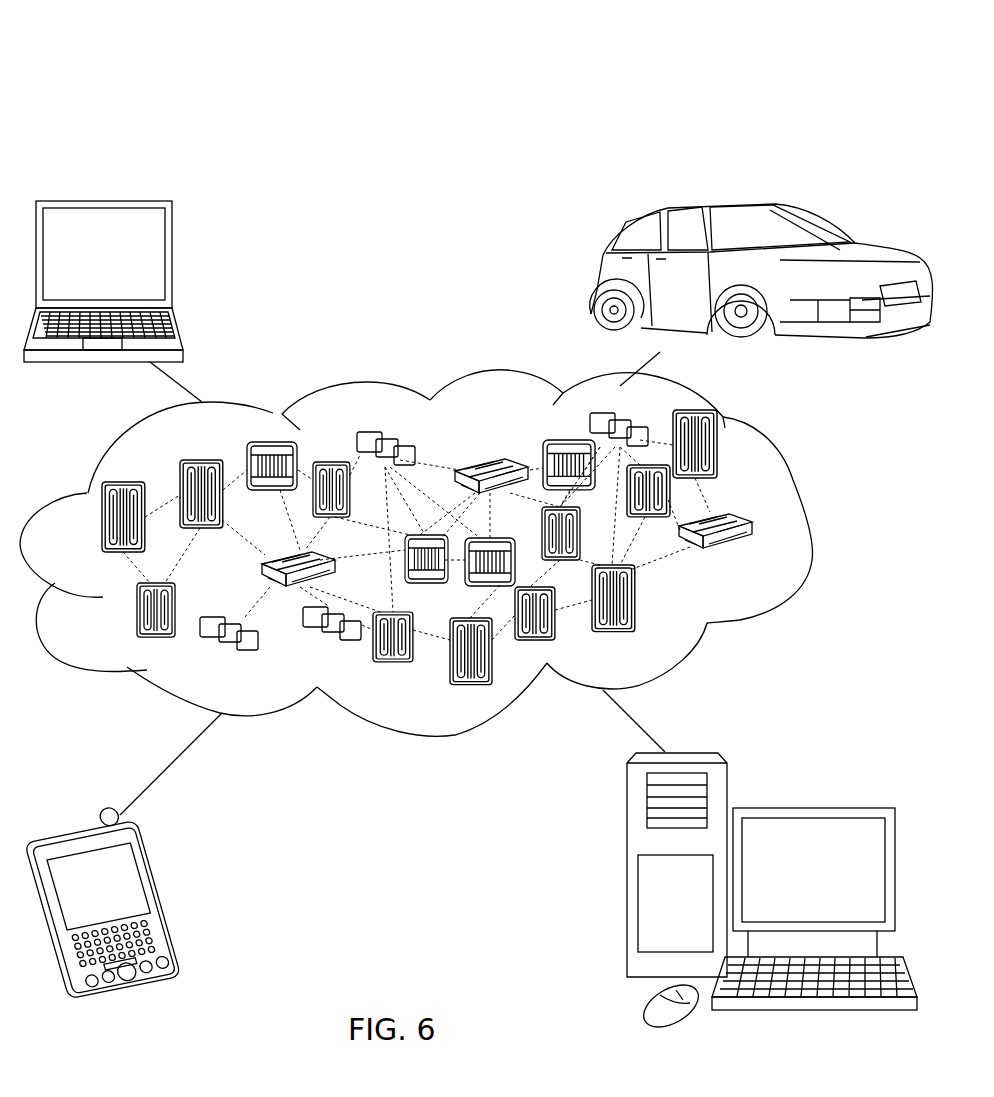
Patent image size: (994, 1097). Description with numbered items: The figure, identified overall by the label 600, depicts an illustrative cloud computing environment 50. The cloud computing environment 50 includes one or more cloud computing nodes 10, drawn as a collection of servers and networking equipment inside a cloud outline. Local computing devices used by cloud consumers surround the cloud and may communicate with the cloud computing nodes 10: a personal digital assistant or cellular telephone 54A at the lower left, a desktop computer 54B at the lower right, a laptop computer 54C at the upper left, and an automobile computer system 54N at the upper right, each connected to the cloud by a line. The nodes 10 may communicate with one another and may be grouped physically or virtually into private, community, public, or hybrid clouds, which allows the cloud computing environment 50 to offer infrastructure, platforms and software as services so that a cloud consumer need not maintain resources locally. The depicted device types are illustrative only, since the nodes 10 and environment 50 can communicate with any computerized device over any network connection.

The cloud computing environment overview 600 is at (82, 64).
The cloud computing environment 50 is at (810, 526).
The cloud computing nodes 10 is at (765, 560).
The personal digital assistant or cellular telephone 54A is at (160, 896).
The desktop computer 54B is at (811, 808).
The laptop computer 54C is at (173, 263).
The automobile computer system 54N is at (590, 277).